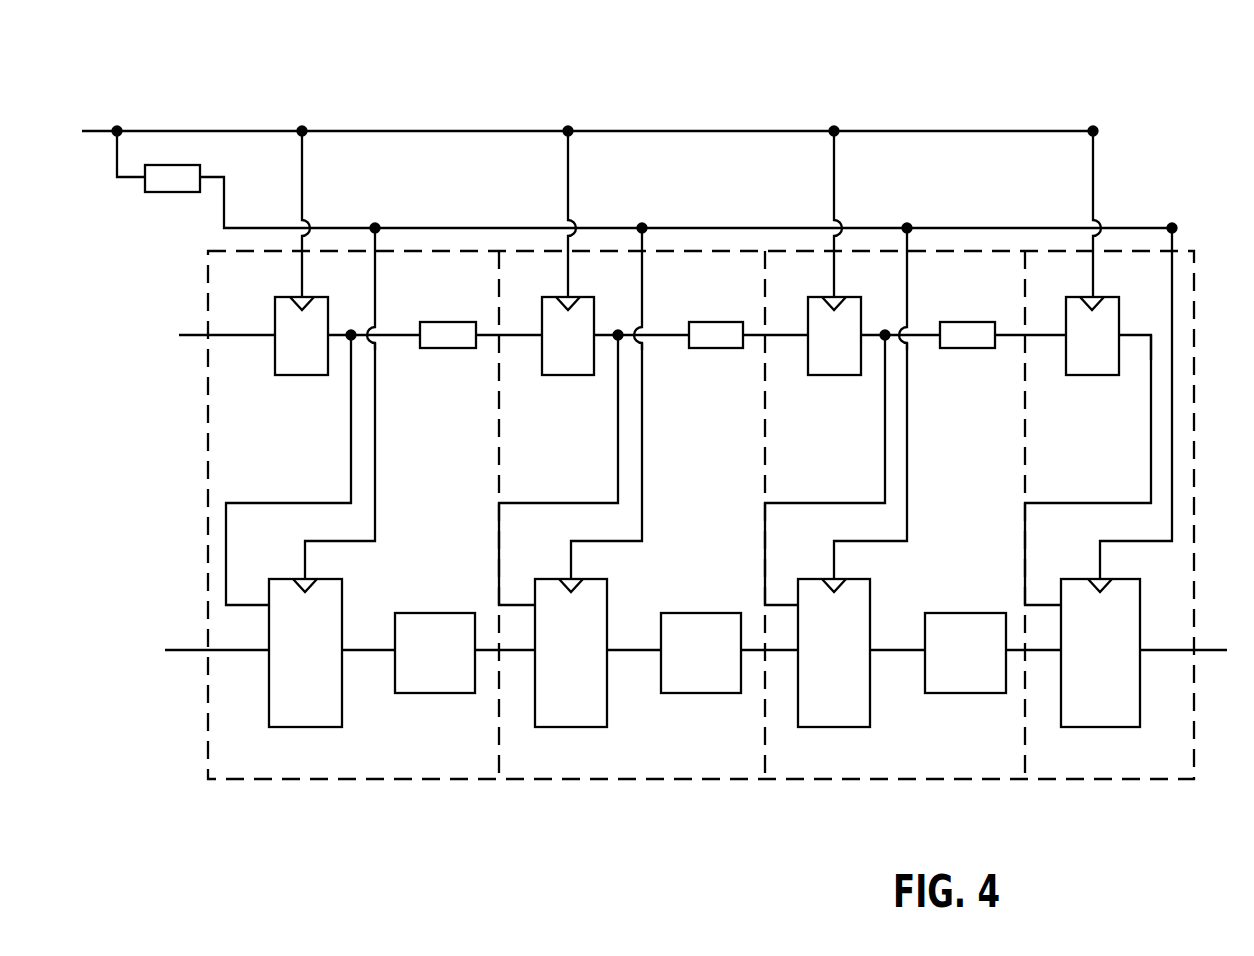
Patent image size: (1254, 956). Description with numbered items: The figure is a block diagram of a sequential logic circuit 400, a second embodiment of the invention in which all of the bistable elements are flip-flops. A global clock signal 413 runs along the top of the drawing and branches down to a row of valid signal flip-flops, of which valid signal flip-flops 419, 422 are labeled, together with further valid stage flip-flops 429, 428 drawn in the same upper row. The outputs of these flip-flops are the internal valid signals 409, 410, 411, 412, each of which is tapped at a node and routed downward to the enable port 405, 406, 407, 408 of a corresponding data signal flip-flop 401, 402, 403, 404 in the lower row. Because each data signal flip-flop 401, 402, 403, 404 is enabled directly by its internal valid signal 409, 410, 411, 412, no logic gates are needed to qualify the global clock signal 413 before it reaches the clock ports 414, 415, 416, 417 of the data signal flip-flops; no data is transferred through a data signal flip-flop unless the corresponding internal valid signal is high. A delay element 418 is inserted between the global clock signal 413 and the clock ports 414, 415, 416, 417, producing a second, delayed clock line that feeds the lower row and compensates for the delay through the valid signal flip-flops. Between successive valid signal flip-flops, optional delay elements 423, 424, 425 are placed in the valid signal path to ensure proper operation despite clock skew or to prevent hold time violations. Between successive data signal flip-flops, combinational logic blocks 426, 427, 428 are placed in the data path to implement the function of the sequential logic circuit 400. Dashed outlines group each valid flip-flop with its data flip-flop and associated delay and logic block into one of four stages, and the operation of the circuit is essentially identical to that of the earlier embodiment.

The sequential logic circuit 400 is at (787, 92).
The global clock signal 413 is at (571, 209).
The delay element 418 is at (647, 182).
The valid signal flip-flop 419 is at (299, 336).
The flip-flop 429 is at (582, 336).
The combinational logic block 428 is at (902, 495).
The valid signal flip-flop 422 is at (1057, 336).
The optional delay element 423 is at (448, 335).
The optional delay element 424 is at (716, 335).
The optional delay element 425 is at (967, 335).
The internal valid signal 409 is at (359, 328).
The internal valid signal 410 is at (625, 328).
The internal valid signal 411 is at (889, 328).
The internal valid signal 412 is at (1145, 328).
The enable port 405 is at (288, 470).
The enable port 406 is at (558, 470).
The enable port 407 is at (825, 470).
The enable port 408 is at (1088, 470).
The clock port 414 is at (340, 461).
The clock port 415 is at (606, 461).
The clock port 416 is at (870, 461).
The clock port 417 is at (1136, 403).
The data signal flip-flop 401 is at (280, 653).
The data signal flip-flop 402 is at (568, 653).
The data signal flip-flop 403 is at (805, 653).
The data signal flip-flop 404 is at (1144, 653).
The combinational logic block 426 is at (435, 653).
The combinational logic block 427 is at (701, 653).